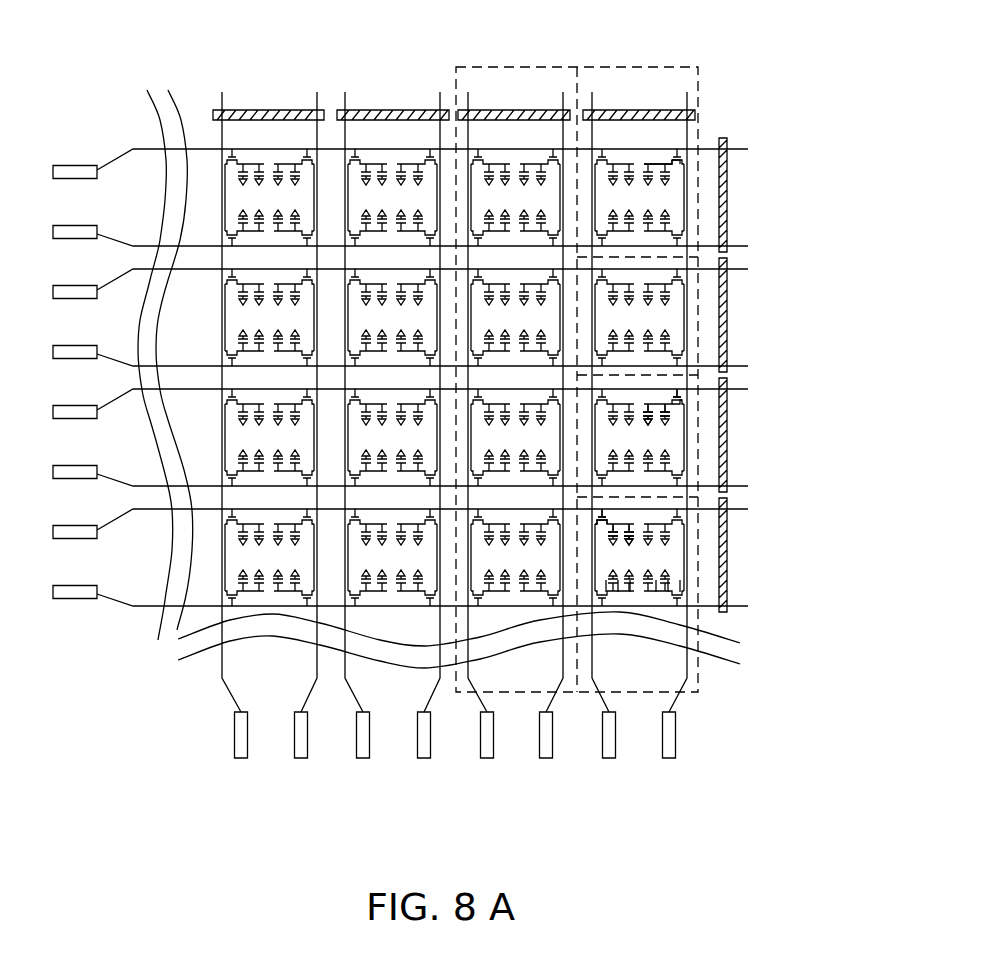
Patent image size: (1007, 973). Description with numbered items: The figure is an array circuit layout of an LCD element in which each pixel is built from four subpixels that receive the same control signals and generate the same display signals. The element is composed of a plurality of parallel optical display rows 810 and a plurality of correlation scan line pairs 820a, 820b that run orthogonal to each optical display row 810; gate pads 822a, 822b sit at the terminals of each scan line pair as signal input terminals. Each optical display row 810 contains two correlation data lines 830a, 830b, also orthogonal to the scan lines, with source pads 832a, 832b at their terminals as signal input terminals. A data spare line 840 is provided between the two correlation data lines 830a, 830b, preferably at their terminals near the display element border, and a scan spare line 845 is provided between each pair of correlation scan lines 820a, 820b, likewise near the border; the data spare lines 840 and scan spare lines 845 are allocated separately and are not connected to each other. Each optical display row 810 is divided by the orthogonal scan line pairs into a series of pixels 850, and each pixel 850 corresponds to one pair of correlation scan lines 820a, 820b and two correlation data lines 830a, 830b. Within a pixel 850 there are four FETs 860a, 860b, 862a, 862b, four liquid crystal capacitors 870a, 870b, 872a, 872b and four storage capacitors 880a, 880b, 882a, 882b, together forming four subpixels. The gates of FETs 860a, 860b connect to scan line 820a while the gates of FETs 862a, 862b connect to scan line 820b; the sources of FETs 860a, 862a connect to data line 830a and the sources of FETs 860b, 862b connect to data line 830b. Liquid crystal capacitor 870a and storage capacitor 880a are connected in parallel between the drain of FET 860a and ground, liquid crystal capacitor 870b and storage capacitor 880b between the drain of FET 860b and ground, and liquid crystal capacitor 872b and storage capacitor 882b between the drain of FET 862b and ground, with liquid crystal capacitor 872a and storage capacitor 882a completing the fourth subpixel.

The optical display row 810 is at (625, 67).
The correlation scan line 820a is at (727, 147).
The correlation scan line 820b is at (683, 227).
The gate pad 822a is at (75, 165).
The gate pad 822b is at (77, 227).
The correlation data line 830a is at (478, 703).
The correlation data line 830b is at (556, 704).
The source pad 832a is at (486, 760).
The source pad 832b is at (546, 760).
The data spare line 840 is at (480, 110).
The scan spare line 845 is at (727, 290).
The pixel 850 is at (748, 237).
The FET 860a is at (602, 527).
The FET 860b is at (675, 405).
The liquid crystal capacitor 870a is at (620, 537).
The liquid crystal capacitor 870b is at (668, 415).
The storage capacitor 880a is at (633, 534).
The storage capacitor 880b is at (656, 420).
The FET 862a is at (606, 580).
The FET 862b is at (656, 580).
The liquid crystal capacitor 872a is at (618, 580).
The liquid crystal capacitor 872b is at (668, 580).
The storage capacitor 882a is at (630, 580).
The storage capacitor 882b is at (680, 580).